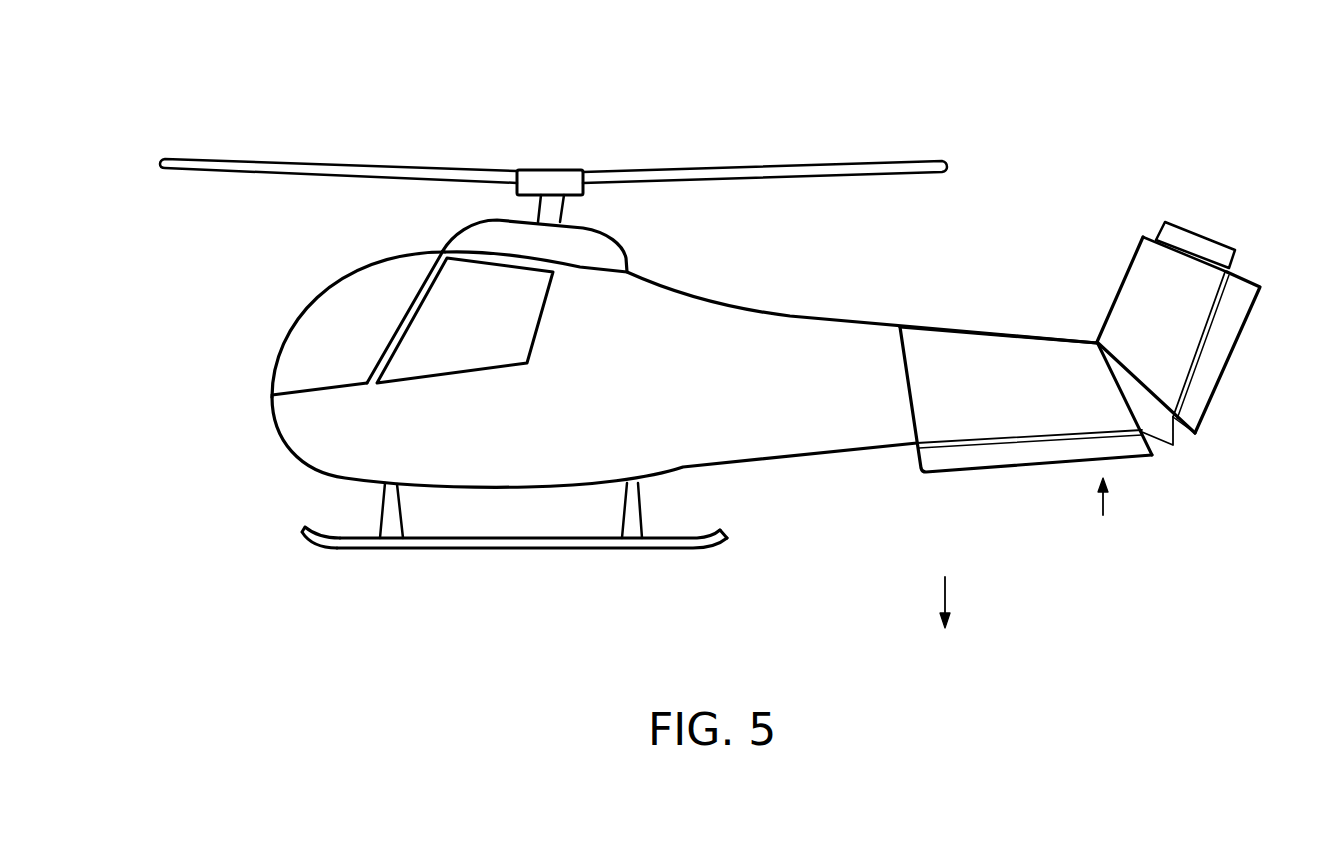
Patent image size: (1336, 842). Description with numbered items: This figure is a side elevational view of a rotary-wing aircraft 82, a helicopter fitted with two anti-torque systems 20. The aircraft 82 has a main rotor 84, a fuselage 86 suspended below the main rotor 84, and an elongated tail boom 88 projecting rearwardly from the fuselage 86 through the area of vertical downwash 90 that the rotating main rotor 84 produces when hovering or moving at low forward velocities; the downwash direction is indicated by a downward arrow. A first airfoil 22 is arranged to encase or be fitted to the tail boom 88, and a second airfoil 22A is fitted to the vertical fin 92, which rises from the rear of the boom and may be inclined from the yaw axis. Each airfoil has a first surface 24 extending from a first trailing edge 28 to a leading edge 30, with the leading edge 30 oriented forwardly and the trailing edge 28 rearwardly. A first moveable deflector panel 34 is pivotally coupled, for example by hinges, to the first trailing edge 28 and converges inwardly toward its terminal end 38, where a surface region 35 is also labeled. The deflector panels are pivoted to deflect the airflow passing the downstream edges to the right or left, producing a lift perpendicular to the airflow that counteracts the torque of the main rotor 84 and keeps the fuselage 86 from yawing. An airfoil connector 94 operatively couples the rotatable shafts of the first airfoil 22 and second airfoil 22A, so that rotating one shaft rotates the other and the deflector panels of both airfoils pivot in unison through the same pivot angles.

The anti-torque system 20 is at (1067, 343).
The airfoil 22 is at (1067, 360).
The second airfoil 22A is at (1129, 325).
The first surface 24 is at (1010, 391).
The first trailing edge 28 is at (977, 435).
The leading edge 30 is at (977, 333).
The first moveable deflector panel 34 is at (1032, 455).
The panel inner edge line 35 is at (1100, 428).
The terminal end 38 is at (973, 475).
The rotary-wing aircraft 82 is at (553, 132).
The main rotor 84 is at (744, 167).
The fuselage 86 is at (733, 391).
The tail boom 88 is at (1098, 513).
The area of vertical downwash 90 is at (940, 619).
The vertical fin 92 is at (1205, 230).
The airfoil connector 94 is at (1185, 446).